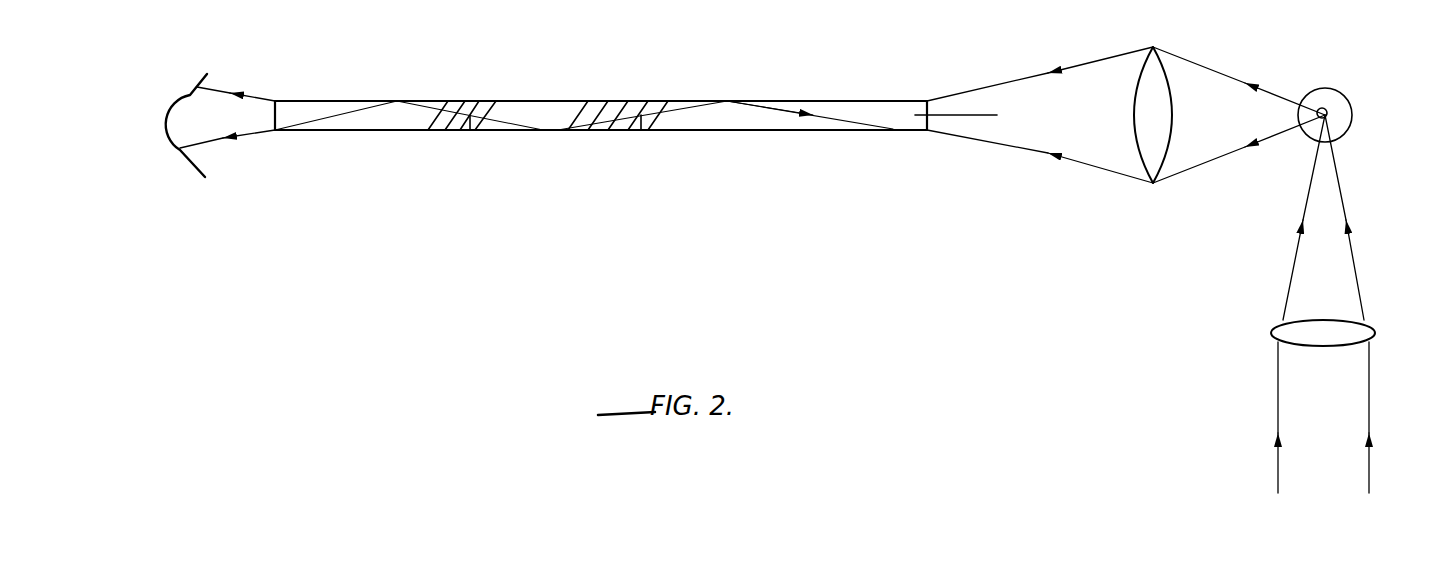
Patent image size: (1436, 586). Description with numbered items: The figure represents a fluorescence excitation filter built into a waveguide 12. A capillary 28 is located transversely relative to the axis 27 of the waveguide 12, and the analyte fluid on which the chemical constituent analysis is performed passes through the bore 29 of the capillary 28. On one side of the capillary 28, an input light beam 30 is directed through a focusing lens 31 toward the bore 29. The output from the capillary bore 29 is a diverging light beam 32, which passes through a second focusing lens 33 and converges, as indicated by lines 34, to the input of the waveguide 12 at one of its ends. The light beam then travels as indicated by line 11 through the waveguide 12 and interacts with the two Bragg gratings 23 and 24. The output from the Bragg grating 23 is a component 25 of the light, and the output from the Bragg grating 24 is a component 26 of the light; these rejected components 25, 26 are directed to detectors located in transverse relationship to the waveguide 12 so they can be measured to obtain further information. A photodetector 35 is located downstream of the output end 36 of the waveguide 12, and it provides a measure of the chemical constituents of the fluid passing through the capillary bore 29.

The line 11 is at (852, 118).
The waveguide 12 is at (787, 130).
The Bragg grating 23 is at (667, 95).
The Bragg grating 24 is at (497, 95).
The component of the light 25 is at (641, 130).
The component of the light 26 is at (470, 130).
The axis 27 is at (967, 115).
The capillary 28 is at (1352, 115).
The bore 29 is at (1337, 97).
The input light beam 30 is at (1325, 405).
The focusing lens 31 is at (1345, 327).
The diverging light beam 32 is at (1220, 72).
The focusing lens 33 is at (1137, 68).
The lines 34 is at (1015, 151).
The photodetector 35 is at (170, 106).
The output end 36 is at (275, 101).